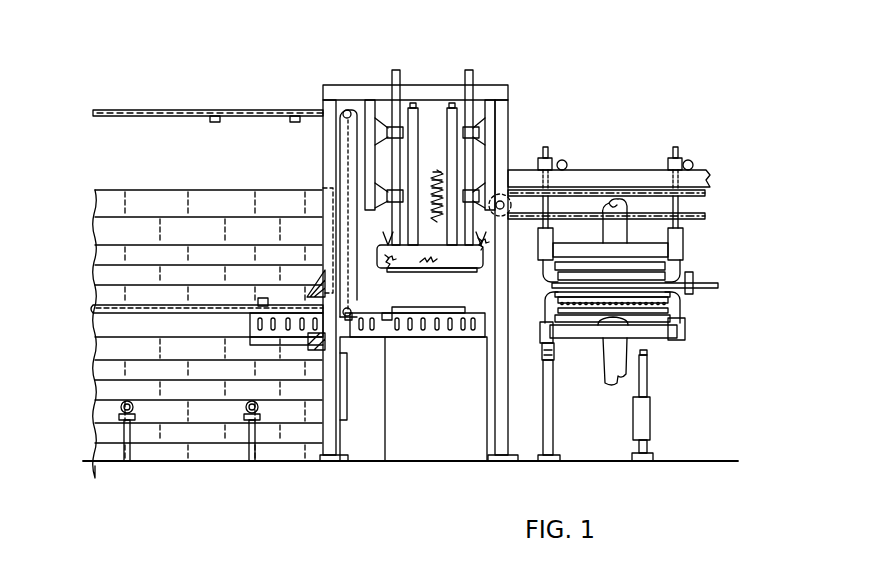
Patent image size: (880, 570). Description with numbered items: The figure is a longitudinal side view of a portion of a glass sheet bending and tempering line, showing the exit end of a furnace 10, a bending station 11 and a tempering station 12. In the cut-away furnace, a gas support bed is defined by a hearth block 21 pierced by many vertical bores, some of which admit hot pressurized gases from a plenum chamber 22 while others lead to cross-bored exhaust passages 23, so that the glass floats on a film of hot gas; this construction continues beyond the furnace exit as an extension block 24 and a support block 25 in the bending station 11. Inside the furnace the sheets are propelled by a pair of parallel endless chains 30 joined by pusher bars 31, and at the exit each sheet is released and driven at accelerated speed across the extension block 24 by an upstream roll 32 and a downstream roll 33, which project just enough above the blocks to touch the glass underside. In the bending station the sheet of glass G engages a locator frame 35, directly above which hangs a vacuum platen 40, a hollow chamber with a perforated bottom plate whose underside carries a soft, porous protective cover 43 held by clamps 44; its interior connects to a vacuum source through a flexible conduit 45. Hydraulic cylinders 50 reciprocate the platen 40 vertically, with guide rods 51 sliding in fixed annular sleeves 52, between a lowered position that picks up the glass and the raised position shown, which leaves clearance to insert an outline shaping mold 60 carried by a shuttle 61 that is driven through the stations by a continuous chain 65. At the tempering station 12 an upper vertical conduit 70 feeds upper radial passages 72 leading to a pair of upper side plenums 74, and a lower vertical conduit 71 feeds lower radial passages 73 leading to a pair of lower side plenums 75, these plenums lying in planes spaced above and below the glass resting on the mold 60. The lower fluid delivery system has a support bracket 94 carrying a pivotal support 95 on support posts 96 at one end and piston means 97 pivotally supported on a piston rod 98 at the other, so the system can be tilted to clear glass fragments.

The furnace 10 is at (201, 170).
The bending station 11 is at (447, 58).
The tempering station 12 is at (612, 136).
The hearth block 21 is at (286, 340).
The plenum chamber 22 is at (312, 346).
The exhaust passages 23 is at (246, 318).
The extension block 24 is at (375, 345).
The support block 25 is at (450, 340).
The endless chains 30 is at (262, 118).
The pusher bars 31 is at (266, 298).
The upstream roll 32 is at (352, 307).
The downstream roll 33 is at (390, 312).
The locator frame 35 is at (467, 311).
The vacuum platen 40 is at (484, 260).
The protective cover 43 is at (384, 259).
The clamps 44 is at (490, 239).
The flexible conduit 45 is at (437, 171).
The hydraulic cylinders 50 is at (441, 131).
The guide rods 51 is at (474, 74).
The annular sleeves 52 is at (391, 122).
The outline shaping mold 60 is at (549, 294).
The shuttle 61 is at (700, 282).
The continuous chain 65 is at (708, 211).
The upper vertical conduit 70 is at (622, 201).
The lower vertical conduit 71 is at (616, 386).
The upper radial passages 72 is at (558, 244).
The lower radial passages 73 is at (562, 340).
The upper side plenums 74 is at (688, 246).
The lower side plenums 75 is at (688, 327).
The support bracket 94 is at (562, 344).
The pivotal support 95 is at (543, 356).
The support posts 96 is at (545, 396).
The piston means 97 is at (652, 418).
The piston rod 98 is at (650, 372).
The sheet of glass G is at (455, 272).